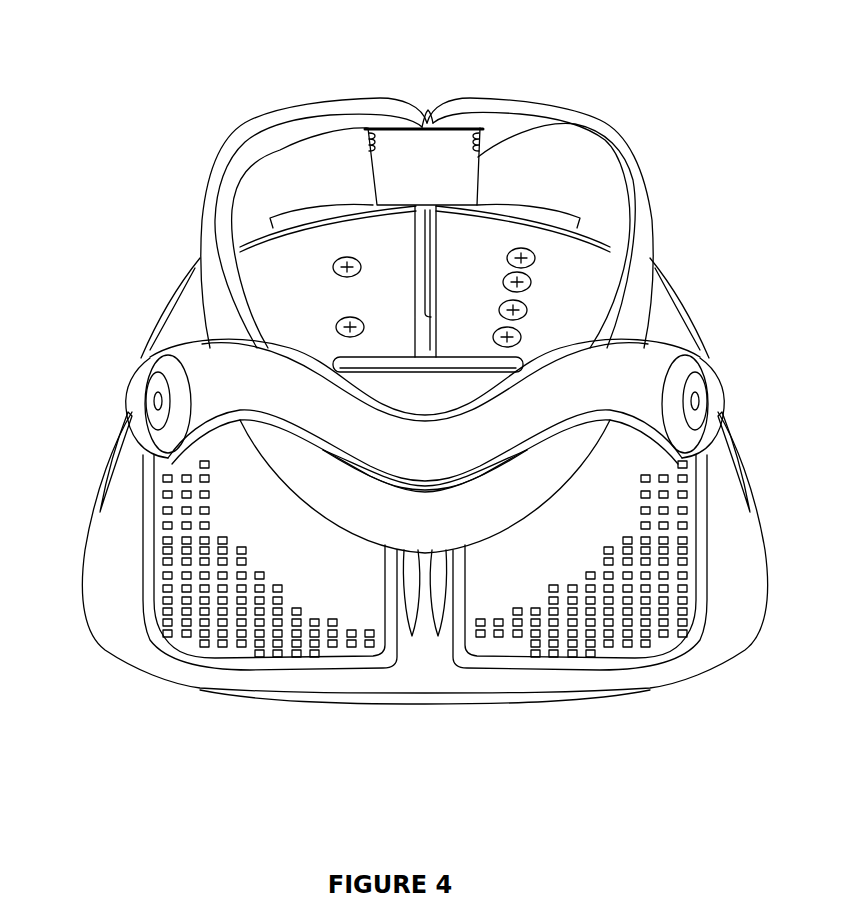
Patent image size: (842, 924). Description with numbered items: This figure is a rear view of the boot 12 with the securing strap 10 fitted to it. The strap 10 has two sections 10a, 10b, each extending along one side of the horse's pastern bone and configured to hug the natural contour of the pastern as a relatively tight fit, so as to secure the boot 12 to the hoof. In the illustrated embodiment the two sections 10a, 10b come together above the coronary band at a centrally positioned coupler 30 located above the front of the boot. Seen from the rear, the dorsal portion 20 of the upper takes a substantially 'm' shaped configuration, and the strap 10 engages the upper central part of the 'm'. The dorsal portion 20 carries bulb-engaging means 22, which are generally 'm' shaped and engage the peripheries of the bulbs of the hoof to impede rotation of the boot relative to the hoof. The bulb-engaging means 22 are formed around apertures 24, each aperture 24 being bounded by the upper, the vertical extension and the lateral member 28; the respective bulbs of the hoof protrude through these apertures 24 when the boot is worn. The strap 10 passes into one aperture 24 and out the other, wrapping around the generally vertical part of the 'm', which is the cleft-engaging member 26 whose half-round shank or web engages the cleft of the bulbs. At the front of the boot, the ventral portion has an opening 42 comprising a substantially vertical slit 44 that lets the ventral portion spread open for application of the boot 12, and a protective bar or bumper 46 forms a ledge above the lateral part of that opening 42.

The boot 12 is at (158, 70).
The strap 10 is at (443, 100).
The strap section 10a is at (207, 217).
The strap section 10b is at (633, 153).
The coupler 30 is at (437, 158).
The vertical slit 44 is at (433, 317).
The opening 42 is at (425, 356).
The protective bar or bumper 46 is at (503, 359).
The lateral member 28 is at (593, 403).
The bulb-engaging means 22 is at (383, 432).
The dorsal portion 20 is at (340, 713).
The aperture 24 is at (258, 506).
The cleft-engaging member 26 is at (432, 640).